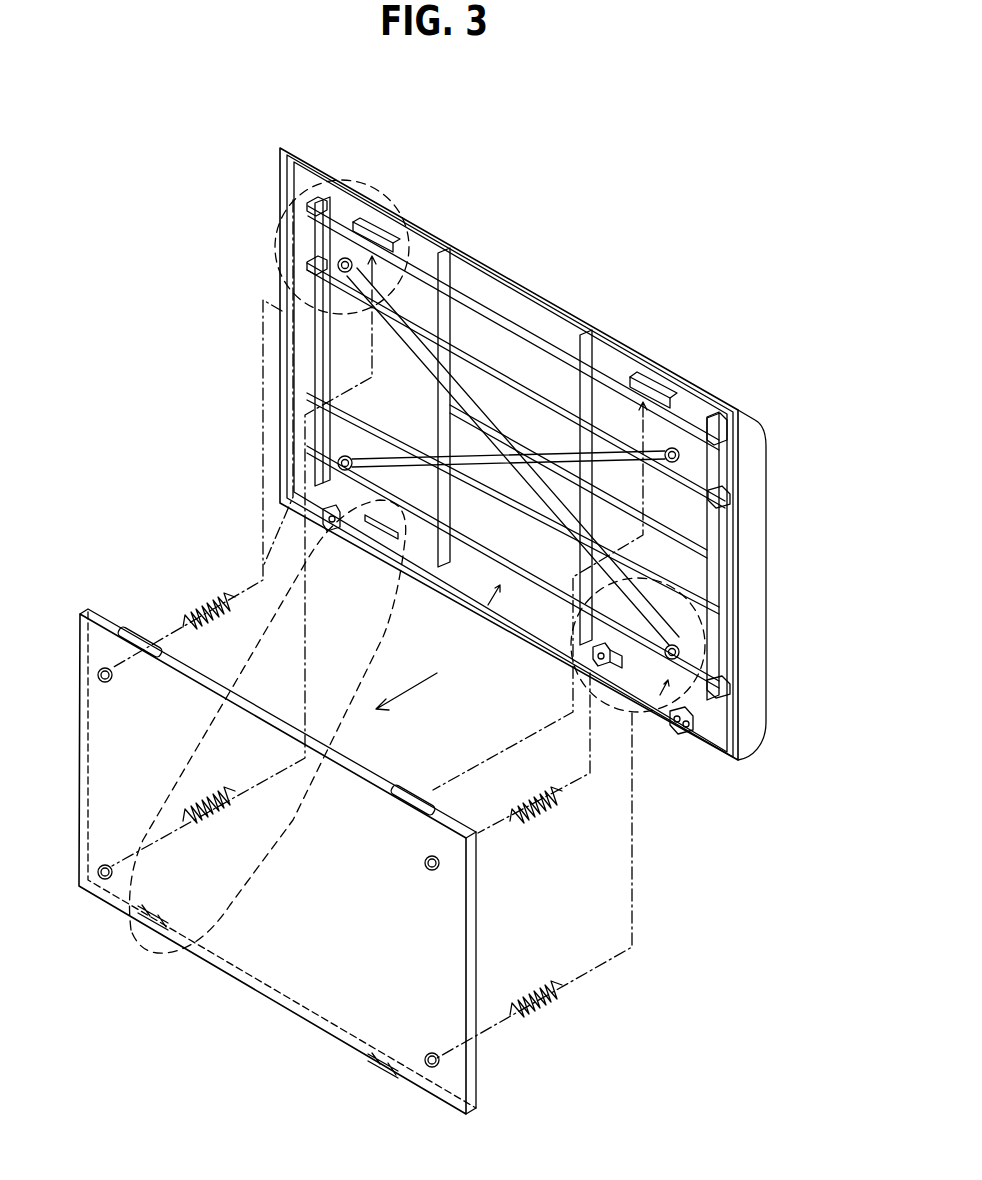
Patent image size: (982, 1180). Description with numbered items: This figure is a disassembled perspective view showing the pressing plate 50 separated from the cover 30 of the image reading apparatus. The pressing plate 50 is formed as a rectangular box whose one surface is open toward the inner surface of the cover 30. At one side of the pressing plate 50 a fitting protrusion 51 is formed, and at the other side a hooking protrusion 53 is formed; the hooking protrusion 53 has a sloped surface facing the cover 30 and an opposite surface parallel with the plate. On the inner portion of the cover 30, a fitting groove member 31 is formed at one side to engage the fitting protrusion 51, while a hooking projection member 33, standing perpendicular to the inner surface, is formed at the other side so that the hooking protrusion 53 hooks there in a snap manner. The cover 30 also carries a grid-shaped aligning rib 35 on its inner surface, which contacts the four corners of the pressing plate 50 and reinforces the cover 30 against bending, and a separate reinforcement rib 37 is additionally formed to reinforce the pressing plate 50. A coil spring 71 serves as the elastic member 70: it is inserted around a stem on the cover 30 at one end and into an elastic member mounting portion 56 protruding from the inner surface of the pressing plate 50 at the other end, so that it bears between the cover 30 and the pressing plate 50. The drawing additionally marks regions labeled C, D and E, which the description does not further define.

The cover 30 is at (748, 423).
The fitting groove member 31 is at (655, 387).
The hooking projection member 33 is at (612, 652).
The aligning rib 35 is at (356, 222).
The reinforcement rib 37 is at (552, 453).
The pressing plate 50 is at (297, 973).
The fitting protrusion 51 is at (135, 637).
The hooking protrusion 53 is at (384, 1064).
The elastic member mounting portion 56 is at (440, 1067).
The elastic member 70 is at (356, 772).
The coil spring 71 is at (212, 600).
The region C is at (396, 182).
The rotation path D is at (163, 970).
The region E is at (705, 708).